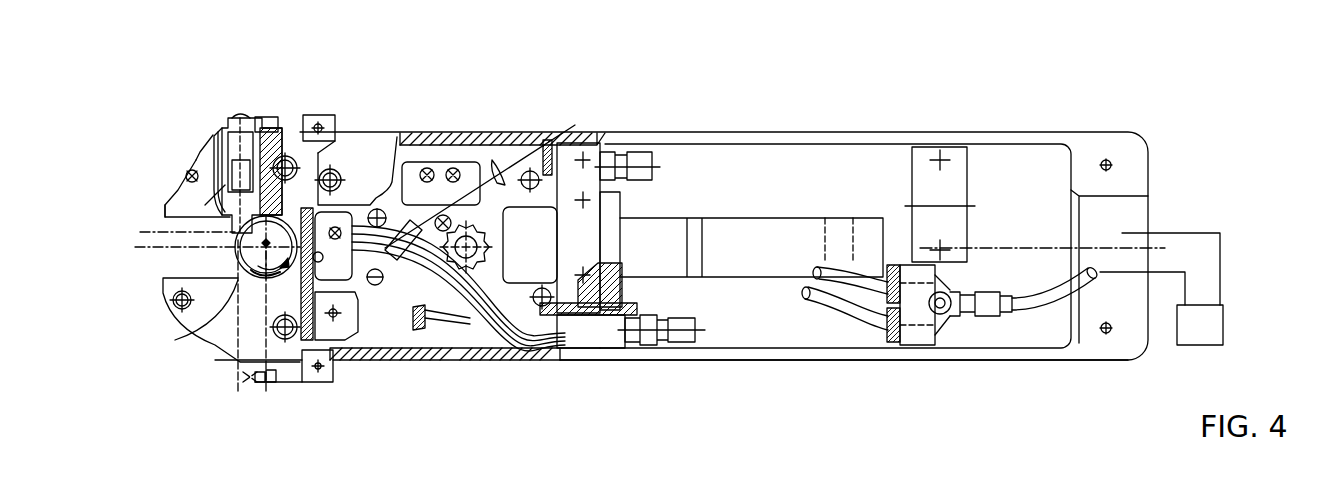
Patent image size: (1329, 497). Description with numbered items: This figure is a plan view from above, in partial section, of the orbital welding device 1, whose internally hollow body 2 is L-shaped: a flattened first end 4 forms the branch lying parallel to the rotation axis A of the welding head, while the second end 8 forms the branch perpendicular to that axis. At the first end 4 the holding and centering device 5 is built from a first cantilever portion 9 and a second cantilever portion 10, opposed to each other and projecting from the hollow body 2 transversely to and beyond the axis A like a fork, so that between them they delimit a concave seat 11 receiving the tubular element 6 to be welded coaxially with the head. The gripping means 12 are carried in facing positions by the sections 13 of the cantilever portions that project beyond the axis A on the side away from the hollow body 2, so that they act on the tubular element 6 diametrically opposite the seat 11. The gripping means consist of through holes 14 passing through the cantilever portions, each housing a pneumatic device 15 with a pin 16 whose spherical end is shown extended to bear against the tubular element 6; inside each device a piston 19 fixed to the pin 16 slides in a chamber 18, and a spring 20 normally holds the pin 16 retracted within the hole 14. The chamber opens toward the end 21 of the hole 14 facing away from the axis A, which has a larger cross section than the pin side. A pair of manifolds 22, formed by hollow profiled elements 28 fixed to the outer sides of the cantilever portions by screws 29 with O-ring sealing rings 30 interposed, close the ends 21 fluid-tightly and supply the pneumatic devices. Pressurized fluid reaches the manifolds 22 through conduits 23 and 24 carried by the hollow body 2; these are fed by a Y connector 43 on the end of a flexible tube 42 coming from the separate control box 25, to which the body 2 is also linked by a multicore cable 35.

The orbital welding device 1 is at (1187, 125).
The hollow body 2 is at (782, 160).
The first end 4 is at (312, 80).
The holding and centering device 5 is at (180, 160).
The tubular element 6 is at (232, 241).
The second end 8 is at (995, 130).
The first cantilever portion 9 is at (186, 177).
The second cantilever portion 10 is at (205, 350).
The concave seat 11 is at (255, 298).
The gripping means 12 is at (268, 80).
The sections 13 is at (283, 140).
The through holes 14 is at (213, 126).
The pneumatic device 15 is at (181, 198).
The pin 16 is at (232, 228).
The chamber 18 is at (245, 125).
The piston 19 is at (212, 162).
The spring 20 is at (198, 160).
The end 21 is at (255, 110).
The manifolds 22 is at (270, 110).
The conduit 23 is at (835, 265).
The conduit 24 is at (815, 303).
The control box 25 is at (1215, 325).
The profiled elements 28 is at (225, 120).
The screws 29 is at (273, 383).
The sealing rings 30 is at (252, 126).
The multicore cable 35 is at (1210, 232).
The flexible tube 42 is at (1040, 293).
The Y connector 43 is at (978, 318).
The rotation axis A is at (260, 252).